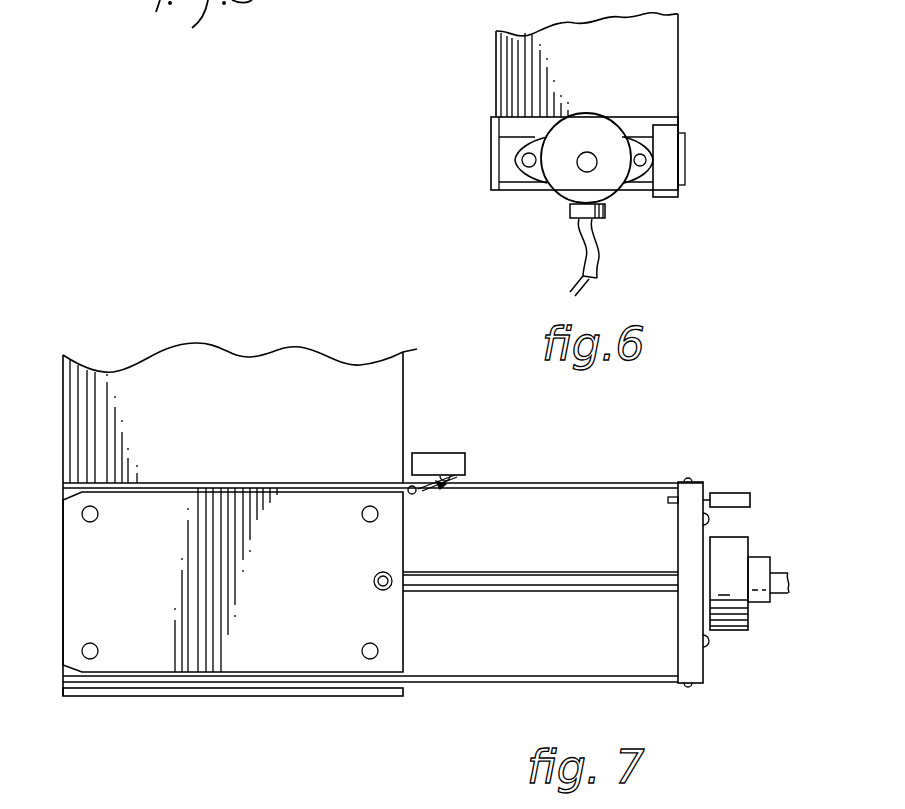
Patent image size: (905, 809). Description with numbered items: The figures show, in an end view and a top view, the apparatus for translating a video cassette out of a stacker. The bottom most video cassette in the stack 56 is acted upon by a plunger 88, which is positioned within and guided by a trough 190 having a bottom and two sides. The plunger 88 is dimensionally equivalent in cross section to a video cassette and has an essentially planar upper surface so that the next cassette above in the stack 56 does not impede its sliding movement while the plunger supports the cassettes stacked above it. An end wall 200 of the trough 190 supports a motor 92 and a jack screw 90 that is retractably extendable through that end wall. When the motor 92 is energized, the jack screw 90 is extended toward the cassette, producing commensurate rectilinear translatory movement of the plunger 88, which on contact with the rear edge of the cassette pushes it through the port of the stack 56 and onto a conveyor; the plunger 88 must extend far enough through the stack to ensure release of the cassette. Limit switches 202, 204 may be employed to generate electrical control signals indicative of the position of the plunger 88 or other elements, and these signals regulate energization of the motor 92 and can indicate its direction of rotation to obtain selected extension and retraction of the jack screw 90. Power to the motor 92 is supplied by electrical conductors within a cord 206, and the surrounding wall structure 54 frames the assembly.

In FIG. 7, the side wall 54 is at (73, 370).
In FIG. 7, the stack 56 is at (343, 697).
In FIG. 7, the plunger 88 is at (303, 521).
In FIG. 6, the jack screw 90 is at (593, 154).
In FIG. 6, the motor 92 is at (616, 204).
In FIG. 7, the motor 92 is at (742, 536).
In FIG. 7, the trough 190 is at (562, 483).
In FIG. 6, the end wall 200 is at (508, 172).
In FIG. 7, the limit switch 202 is at (445, 453).
In FIG. 6, the limit switch 204 is at (667, 167).
In FIG. 7, the limit switch 204 is at (735, 490).
In FIG. 6, the cord 206 is at (606, 256).